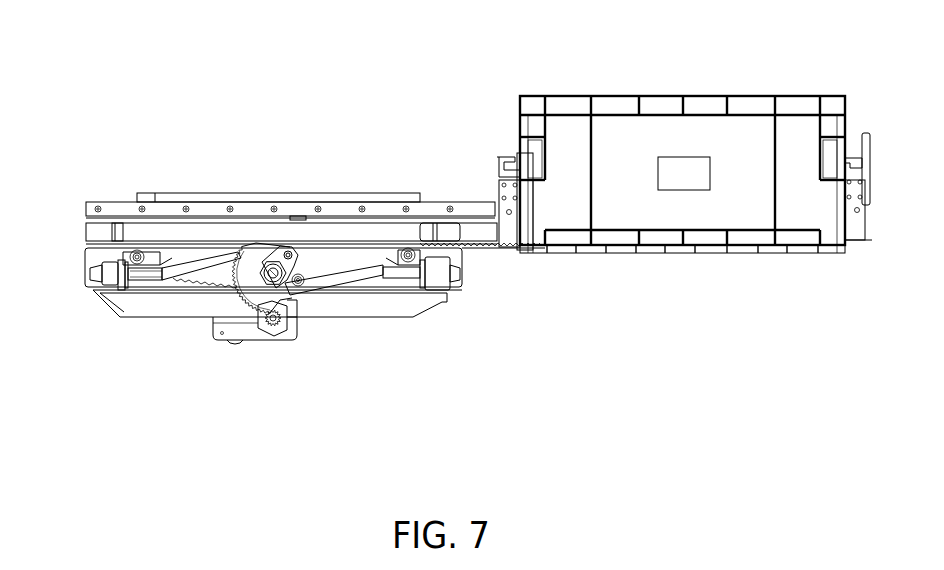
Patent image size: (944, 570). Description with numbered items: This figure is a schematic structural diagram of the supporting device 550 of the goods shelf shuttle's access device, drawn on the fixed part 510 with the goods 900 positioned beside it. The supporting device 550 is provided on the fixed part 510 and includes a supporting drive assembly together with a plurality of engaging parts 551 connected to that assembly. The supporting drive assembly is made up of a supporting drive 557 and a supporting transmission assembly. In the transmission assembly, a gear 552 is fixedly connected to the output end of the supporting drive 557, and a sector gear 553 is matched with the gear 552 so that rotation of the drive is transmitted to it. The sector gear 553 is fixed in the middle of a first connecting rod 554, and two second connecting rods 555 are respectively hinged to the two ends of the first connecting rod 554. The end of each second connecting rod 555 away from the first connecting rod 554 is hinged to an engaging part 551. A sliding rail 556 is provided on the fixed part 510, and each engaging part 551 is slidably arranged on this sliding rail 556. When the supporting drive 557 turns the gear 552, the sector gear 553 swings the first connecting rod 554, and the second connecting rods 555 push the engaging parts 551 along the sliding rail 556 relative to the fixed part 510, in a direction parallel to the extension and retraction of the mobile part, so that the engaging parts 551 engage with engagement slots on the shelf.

The goods 900 is at (653, 133).
The supporting device 550 is at (113, 258).
The engaging part 551 is at (97, 270).
The gear 552 is at (288, 305).
The sector gear 553 is at (248, 260).
The first connecting rod 554 is at (282, 289).
The second connecting rod 555 is at (198, 265).
The sliding rail 556 is at (117, 287).
The supporting drive 557 is at (258, 328).
The fixed part 510 is at (160, 306).